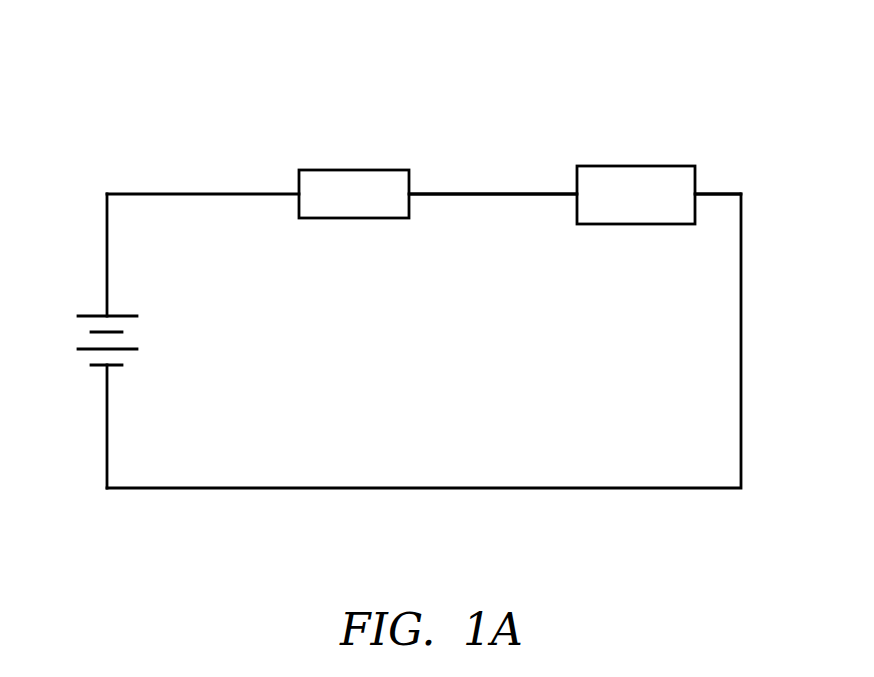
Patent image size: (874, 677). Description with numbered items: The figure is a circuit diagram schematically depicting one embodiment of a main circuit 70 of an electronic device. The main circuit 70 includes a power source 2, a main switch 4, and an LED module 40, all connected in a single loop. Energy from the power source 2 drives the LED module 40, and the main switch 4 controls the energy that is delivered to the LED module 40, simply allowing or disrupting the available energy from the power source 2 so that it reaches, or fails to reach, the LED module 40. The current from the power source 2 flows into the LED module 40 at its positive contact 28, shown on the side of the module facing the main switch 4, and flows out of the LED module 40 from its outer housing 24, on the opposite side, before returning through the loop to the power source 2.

The power source 2 is at (77, 338).
The main switch 4 is at (342, 170).
The outer housing 24 is at (696, 190).
The positive contact 28 is at (577, 192).
The LED module 40 is at (644, 152).
The main circuit 70 is at (390, 72).